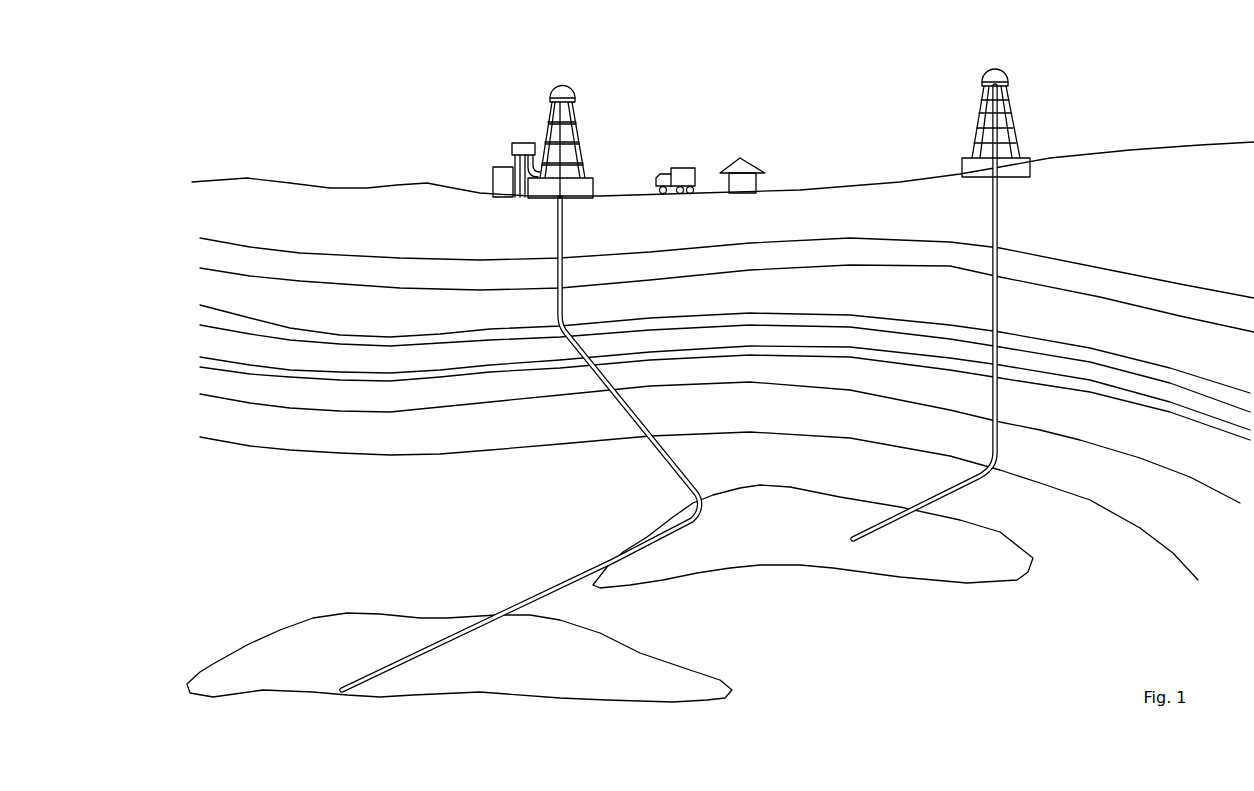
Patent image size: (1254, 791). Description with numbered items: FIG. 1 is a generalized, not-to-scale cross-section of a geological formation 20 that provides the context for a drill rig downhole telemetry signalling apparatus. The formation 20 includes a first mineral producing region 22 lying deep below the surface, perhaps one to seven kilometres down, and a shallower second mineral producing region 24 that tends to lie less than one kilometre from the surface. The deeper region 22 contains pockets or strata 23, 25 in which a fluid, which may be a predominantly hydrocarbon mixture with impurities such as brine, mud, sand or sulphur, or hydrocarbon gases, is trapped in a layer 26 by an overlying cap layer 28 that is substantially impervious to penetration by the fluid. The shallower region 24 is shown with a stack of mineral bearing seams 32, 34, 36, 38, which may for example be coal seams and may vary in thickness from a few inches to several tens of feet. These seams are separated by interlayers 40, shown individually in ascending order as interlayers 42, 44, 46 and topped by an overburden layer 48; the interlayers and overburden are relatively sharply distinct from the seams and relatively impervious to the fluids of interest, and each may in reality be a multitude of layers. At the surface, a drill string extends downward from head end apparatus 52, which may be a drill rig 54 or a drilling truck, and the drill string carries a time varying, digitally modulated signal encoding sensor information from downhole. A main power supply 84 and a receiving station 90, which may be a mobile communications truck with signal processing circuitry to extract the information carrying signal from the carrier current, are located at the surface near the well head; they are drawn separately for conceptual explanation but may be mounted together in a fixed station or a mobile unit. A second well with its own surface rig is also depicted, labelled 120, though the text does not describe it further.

The geological formation 20 is at (688, 56).
The first mineral producing region 22 is at (258, 533).
The pocket or stratum 23 is at (268, 658).
The second mineral producing region 24 is at (254, 471).
The pocket or stratum 25 is at (902, 565).
The layer 26 is at (305, 637).
The cap layer 28 is at (850, 472).
The mineral bearing seam 32 is at (353, 435).
The mineral bearing seam 34 is at (290, 377).
The mineral bearing seam 36 is at (297, 337).
The mineral bearing seam 38 is at (297, 268).
The interlayers 40 is at (405, 395).
The interlayer 42 is at (435, 388).
The interlayer 44 is at (367, 357).
The interlayer 46 is at (382, 302).
The overburden layer 48 is at (390, 208).
The head end apparatus 52 is at (558, 87).
The drill rig 54 is at (568, 90).
The main power supply 84 is at (754, 167).
The receiving station 90 is at (683, 167).
The second wellbore 120 is at (998, 207).